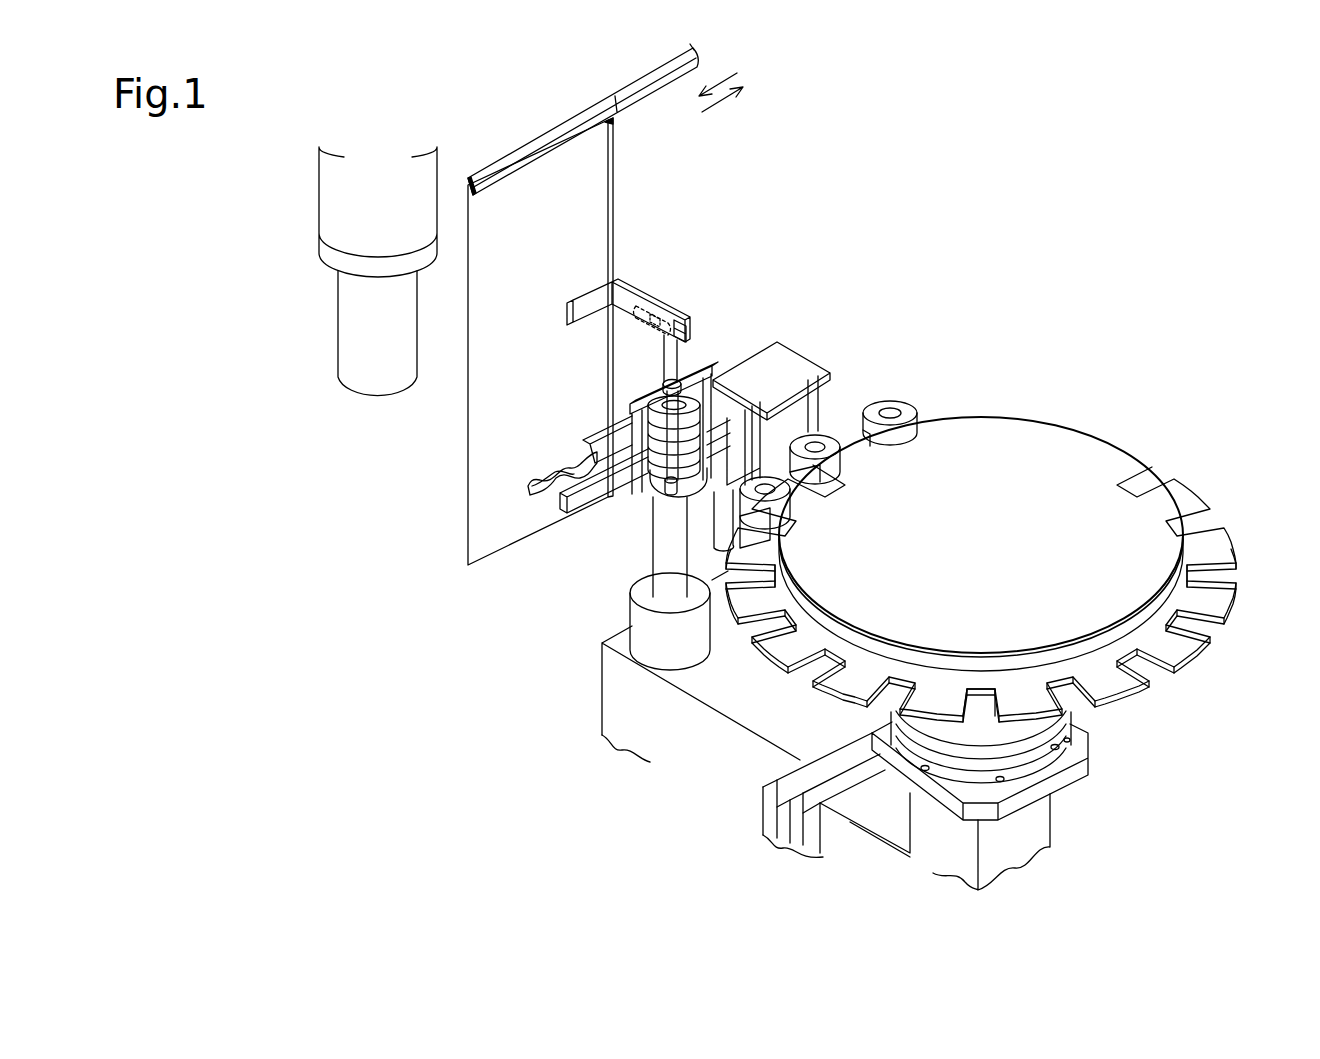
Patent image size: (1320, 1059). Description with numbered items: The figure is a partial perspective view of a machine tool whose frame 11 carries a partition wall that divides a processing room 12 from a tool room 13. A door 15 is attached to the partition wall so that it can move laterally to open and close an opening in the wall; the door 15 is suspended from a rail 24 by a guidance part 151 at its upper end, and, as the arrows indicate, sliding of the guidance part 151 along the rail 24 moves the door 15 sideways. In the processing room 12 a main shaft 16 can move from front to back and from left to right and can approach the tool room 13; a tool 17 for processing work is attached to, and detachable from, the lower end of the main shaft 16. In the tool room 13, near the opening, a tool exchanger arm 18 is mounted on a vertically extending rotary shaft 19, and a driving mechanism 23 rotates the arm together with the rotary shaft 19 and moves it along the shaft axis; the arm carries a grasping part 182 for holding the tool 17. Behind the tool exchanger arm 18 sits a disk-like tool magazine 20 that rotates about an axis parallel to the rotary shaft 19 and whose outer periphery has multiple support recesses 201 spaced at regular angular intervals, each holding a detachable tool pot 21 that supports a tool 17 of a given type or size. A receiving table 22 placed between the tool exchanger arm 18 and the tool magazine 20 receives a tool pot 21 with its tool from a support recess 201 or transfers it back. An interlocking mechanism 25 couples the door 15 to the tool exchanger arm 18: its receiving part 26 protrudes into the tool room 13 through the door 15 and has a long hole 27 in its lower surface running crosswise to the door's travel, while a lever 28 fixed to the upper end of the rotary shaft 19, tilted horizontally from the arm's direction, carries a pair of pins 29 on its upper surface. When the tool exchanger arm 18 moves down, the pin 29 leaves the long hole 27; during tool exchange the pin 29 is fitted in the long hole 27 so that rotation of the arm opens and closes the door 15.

The frame 11 is at (600, 700).
The processing room 12 is at (353, 291).
The tool room 13 is at (981, 461).
The door 15 is at (468, 298).
The guidance part 151 is at (535, 139).
The main shaft 16 is at (319, 191).
The tool 17 is at (338, 308).
The tool exchanger arm 18 is at (582, 452).
The grasping part 182 is at (565, 460).
The rotary shaft 19 is at (653, 563).
The tool magazine 20 is at (1122, 692).
The support recess 201 is at (752, 638).
The tool pot 21 is at (898, 401).
The receiving table 22 is at (820, 358).
The driving mechanism 23 is at (652, 660).
The rail 24 is at (668, 85).
The interlocking mechanism 25 is at (634, 283).
The receiving part 26 is at (655, 306).
The long hole 27 is at (649, 326).
The lever 28 is at (682, 354).
The pin 29 is at (688, 324).